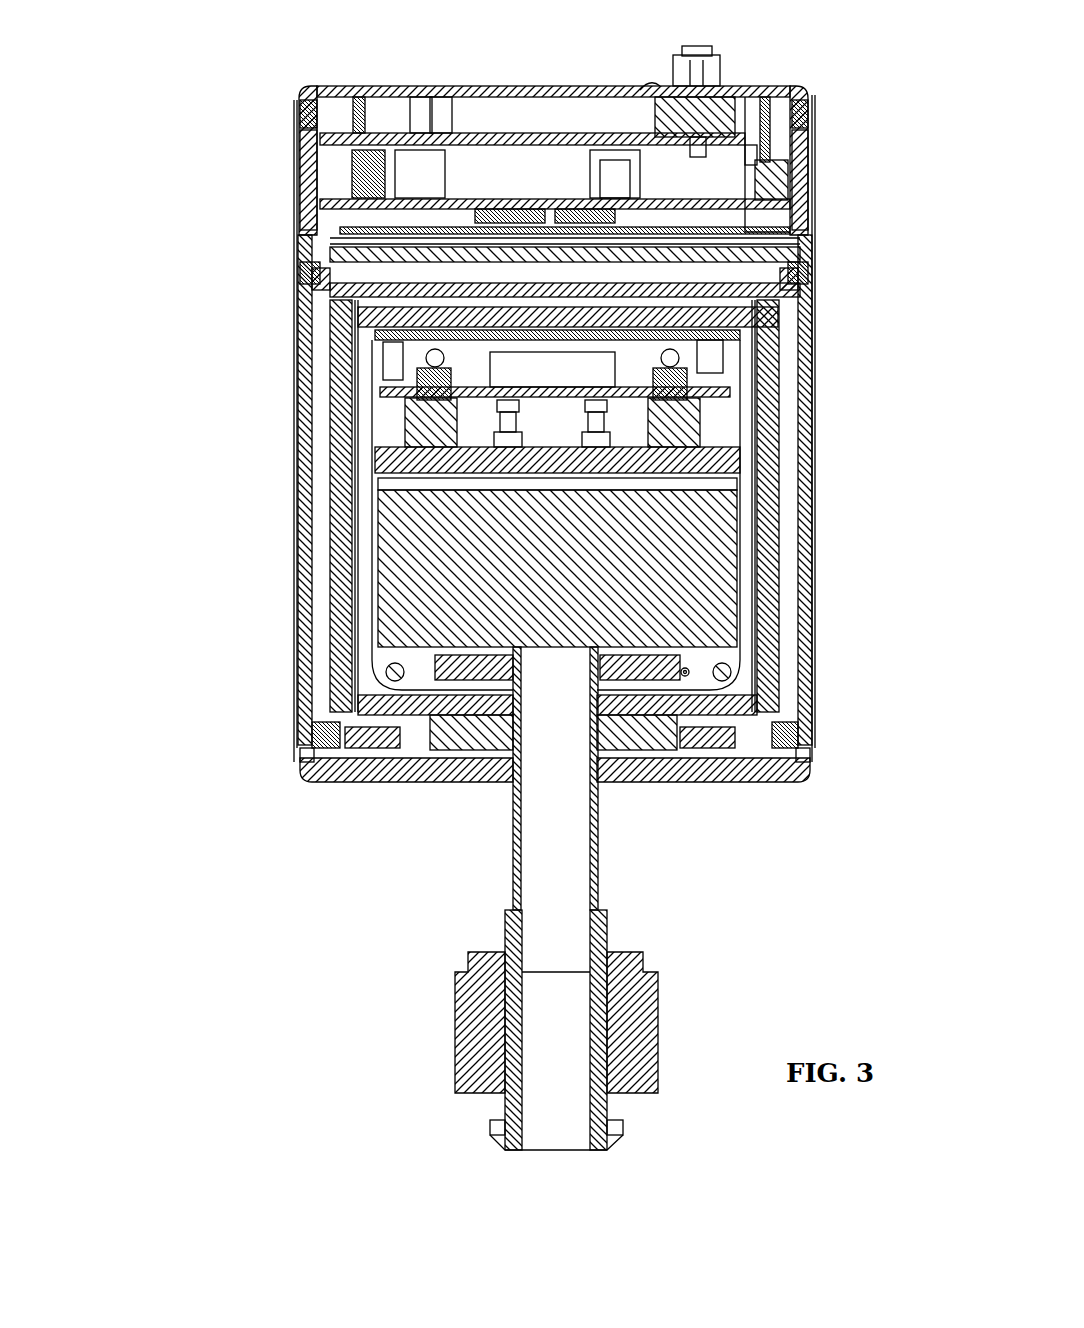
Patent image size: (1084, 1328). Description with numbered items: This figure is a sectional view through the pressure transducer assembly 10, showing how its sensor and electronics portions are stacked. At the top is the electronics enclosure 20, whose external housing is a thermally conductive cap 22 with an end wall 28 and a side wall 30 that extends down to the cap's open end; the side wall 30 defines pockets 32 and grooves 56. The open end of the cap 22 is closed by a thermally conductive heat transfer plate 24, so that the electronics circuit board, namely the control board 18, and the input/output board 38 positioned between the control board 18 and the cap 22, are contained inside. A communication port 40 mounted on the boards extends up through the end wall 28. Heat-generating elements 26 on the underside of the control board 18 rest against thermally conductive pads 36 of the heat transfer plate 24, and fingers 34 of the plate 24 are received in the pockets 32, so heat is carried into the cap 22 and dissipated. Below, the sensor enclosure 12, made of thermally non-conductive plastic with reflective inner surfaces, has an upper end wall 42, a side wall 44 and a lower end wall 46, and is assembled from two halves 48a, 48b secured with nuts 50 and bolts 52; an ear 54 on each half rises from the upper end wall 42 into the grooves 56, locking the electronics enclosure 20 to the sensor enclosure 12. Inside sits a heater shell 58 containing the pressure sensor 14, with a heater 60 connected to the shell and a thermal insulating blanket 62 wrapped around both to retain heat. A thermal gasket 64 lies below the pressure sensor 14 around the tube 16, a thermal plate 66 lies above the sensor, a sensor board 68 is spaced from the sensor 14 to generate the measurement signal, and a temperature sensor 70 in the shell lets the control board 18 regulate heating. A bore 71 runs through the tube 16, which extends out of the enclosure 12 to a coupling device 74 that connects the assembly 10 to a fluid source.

The pressure transducer assembly 10 is at (134, 170).
The sensor enclosure 12 is at (822, 494).
The pressure sensor 14 is at (727, 500).
The tube 16 is at (598, 870).
The electronics circuit board 18 is at (310, 205).
The electronics enclosure 20 is at (810, 85).
The external housing 22 is at (553, 88).
The heat transfer plate 24 is at (395, 228).
The heat-generating elements 26 is at (560, 208).
The end wall 28 is at (483, 98).
The side wall 30 is at (300, 157).
The pockets 32 is at (353, 127).
The fingers 34 is at (650, 240).
The thermally conductive pads 36 is at (400, 216).
The input/output board 38 is at (505, 142).
The communication port 40 is at (722, 72).
The upper end wall 42 is at (742, 320).
The side wall 44 is at (810, 548).
The lower end wall 46 is at (740, 770).
The enclosure half 48a is at (318, 792).
The enclosure half 48b is at (812, 780).
The nuts 50 is at (322, 292).
The bolts 52 is at (312, 752).
The ear 54 is at (300, 110).
The grooves 56 is at (308, 122).
The heater shell 58 is at (366, 620).
The heater 60 is at (355, 596).
The thermal insulating blanket 62 is at (338, 560).
The thermal gasket 64 is at (470, 722).
The thermal plate 66 is at (385, 473).
The sensor board 68 is at (380, 397).
The temperature sensor 70 is at (695, 660).
The bore 71 is at (502, 760).
The coupling device 74 is at (657, 1025).